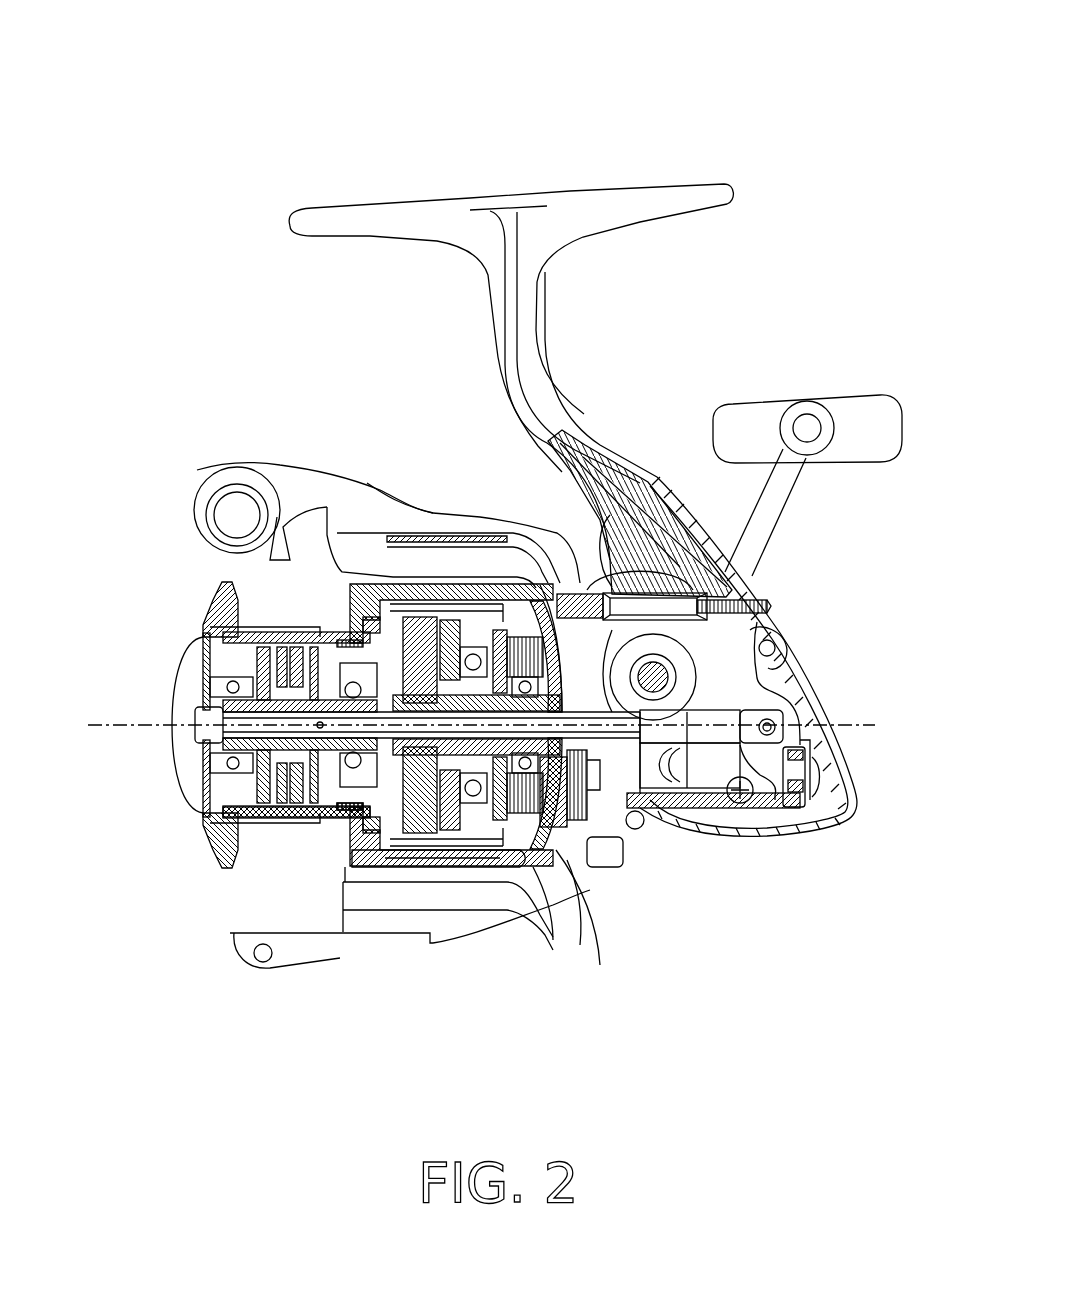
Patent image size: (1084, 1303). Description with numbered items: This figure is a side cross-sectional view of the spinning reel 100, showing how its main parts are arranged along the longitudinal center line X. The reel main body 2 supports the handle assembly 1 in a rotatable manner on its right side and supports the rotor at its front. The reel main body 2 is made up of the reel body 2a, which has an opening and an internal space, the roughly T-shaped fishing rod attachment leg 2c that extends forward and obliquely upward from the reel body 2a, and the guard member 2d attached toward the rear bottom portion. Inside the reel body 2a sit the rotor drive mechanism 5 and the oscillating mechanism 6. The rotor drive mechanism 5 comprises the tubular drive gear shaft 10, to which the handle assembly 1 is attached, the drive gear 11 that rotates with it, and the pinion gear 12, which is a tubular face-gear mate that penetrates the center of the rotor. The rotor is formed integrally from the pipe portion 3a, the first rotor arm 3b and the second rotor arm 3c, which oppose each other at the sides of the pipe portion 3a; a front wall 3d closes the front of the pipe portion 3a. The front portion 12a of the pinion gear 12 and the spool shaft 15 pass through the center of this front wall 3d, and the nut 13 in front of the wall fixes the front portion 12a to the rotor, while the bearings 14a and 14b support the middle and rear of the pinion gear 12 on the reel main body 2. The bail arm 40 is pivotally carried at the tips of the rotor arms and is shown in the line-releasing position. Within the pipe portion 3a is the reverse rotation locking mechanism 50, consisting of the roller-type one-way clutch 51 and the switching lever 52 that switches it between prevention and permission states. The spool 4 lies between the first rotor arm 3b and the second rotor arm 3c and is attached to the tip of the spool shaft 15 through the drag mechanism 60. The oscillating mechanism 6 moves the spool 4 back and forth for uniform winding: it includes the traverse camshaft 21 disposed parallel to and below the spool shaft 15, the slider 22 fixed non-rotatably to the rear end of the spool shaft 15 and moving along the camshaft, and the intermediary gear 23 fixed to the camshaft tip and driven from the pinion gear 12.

The spinning reel 100 is at (558, 146).
The handle assembly 1 is at (846, 390).
The reel main body 2 is at (620, 347).
The reel body 2a is at (735, 566).
The fishing rod attachment leg 2c is at (560, 383).
The guard member 2d is at (813, 647).
The pipe portion 3a is at (417, 593).
The first rotor arm 3b is at (427, 548).
The second rotor arm 3c is at (437, 855).
The front wall 3d is at (430, 937).
The spool 4 is at (267, 835).
The rotor drive mechanism 5 is at (633, 650).
The oscillating mechanism 6 is at (720, 797).
The drive gear shaft 10 is at (742, 620).
The drive gear 11 is at (685, 485).
The pinion gear 12 is at (463, 712).
The front portion 12a is at (400, 638).
The nut 13 is at (350, 820).
The bearing 14a is at (515, 872).
The bearing 14b is at (628, 822).
The spool shaft 15 is at (203, 802).
The traverse camshaft 21 is at (703, 785).
The slider 22 is at (767, 767).
The intermediary gear 23 is at (577, 810).
The bail arm 40 is at (285, 460).
The reverse rotation locking mechanism 50 is at (457, 867).
The one-way clutch 51 is at (430, 845).
The switching lever 52 is at (608, 853).
The drag mechanism 60 is at (243, 852).
The spool shaft axis X is at (150, 715).